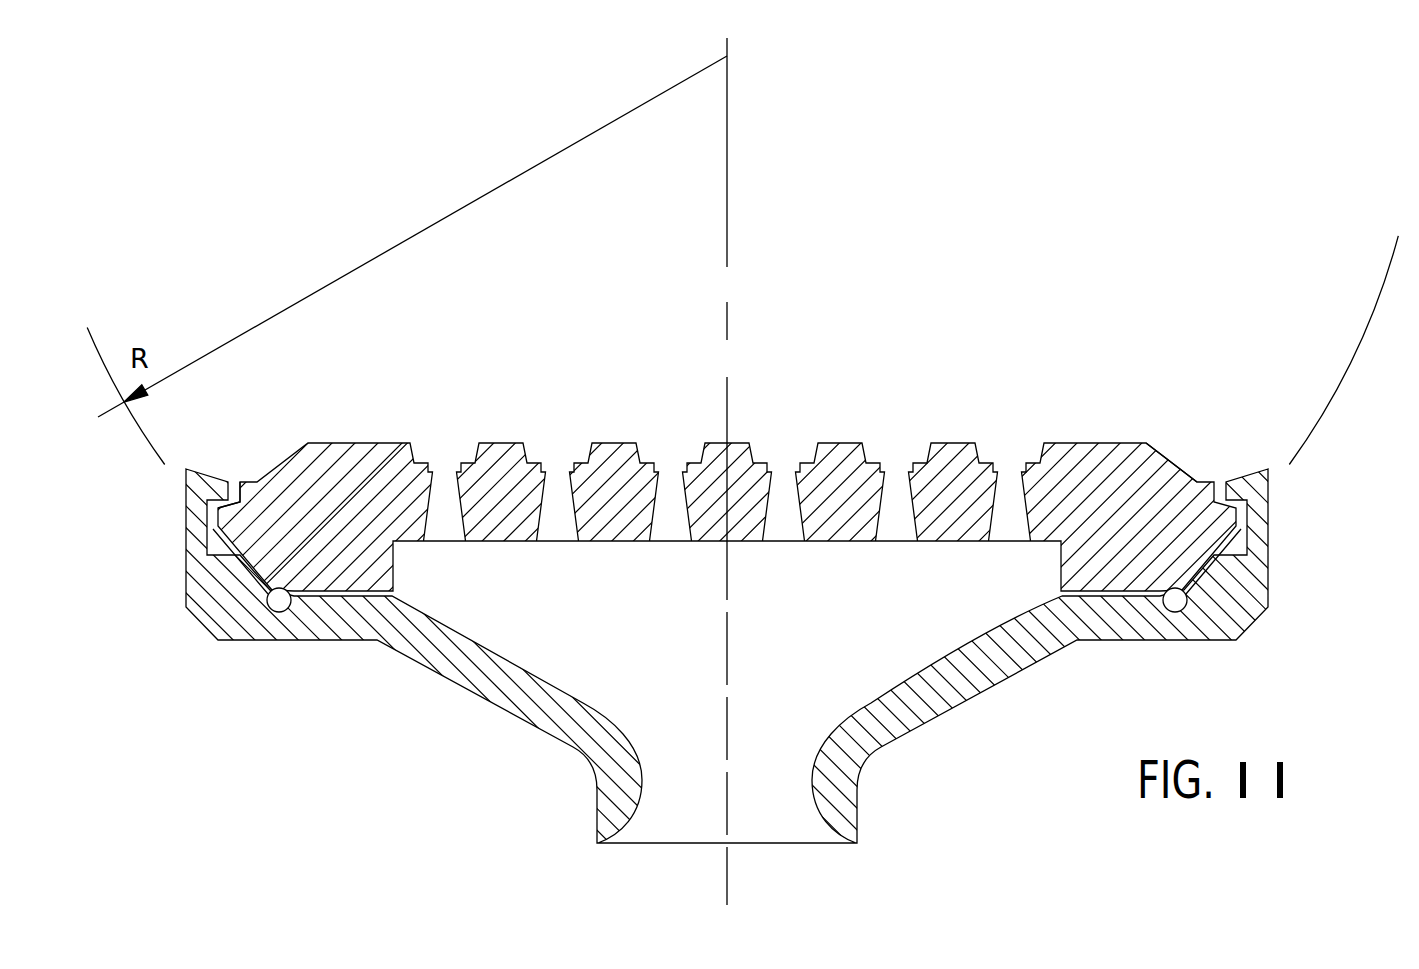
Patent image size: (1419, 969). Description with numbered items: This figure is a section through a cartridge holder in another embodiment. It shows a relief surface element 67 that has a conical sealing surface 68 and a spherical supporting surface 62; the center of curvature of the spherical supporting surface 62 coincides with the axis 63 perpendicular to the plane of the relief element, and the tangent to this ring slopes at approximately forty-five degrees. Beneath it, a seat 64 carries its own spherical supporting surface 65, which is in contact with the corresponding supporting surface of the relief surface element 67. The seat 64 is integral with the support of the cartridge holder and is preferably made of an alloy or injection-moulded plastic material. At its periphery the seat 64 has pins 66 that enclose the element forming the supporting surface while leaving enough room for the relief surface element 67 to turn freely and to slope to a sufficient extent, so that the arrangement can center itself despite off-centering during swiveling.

The spherical supporting surface 62 is at (1213, 570).
The axis 63 is at (727, 273).
The seat 64 is at (217, 588).
The spherical supporting surface 65 is at (265, 600).
The pins 66 is at (218, 487).
The relief surface element 67 is at (1065, 468).
The conical sealing surface 68 is at (1165, 455).